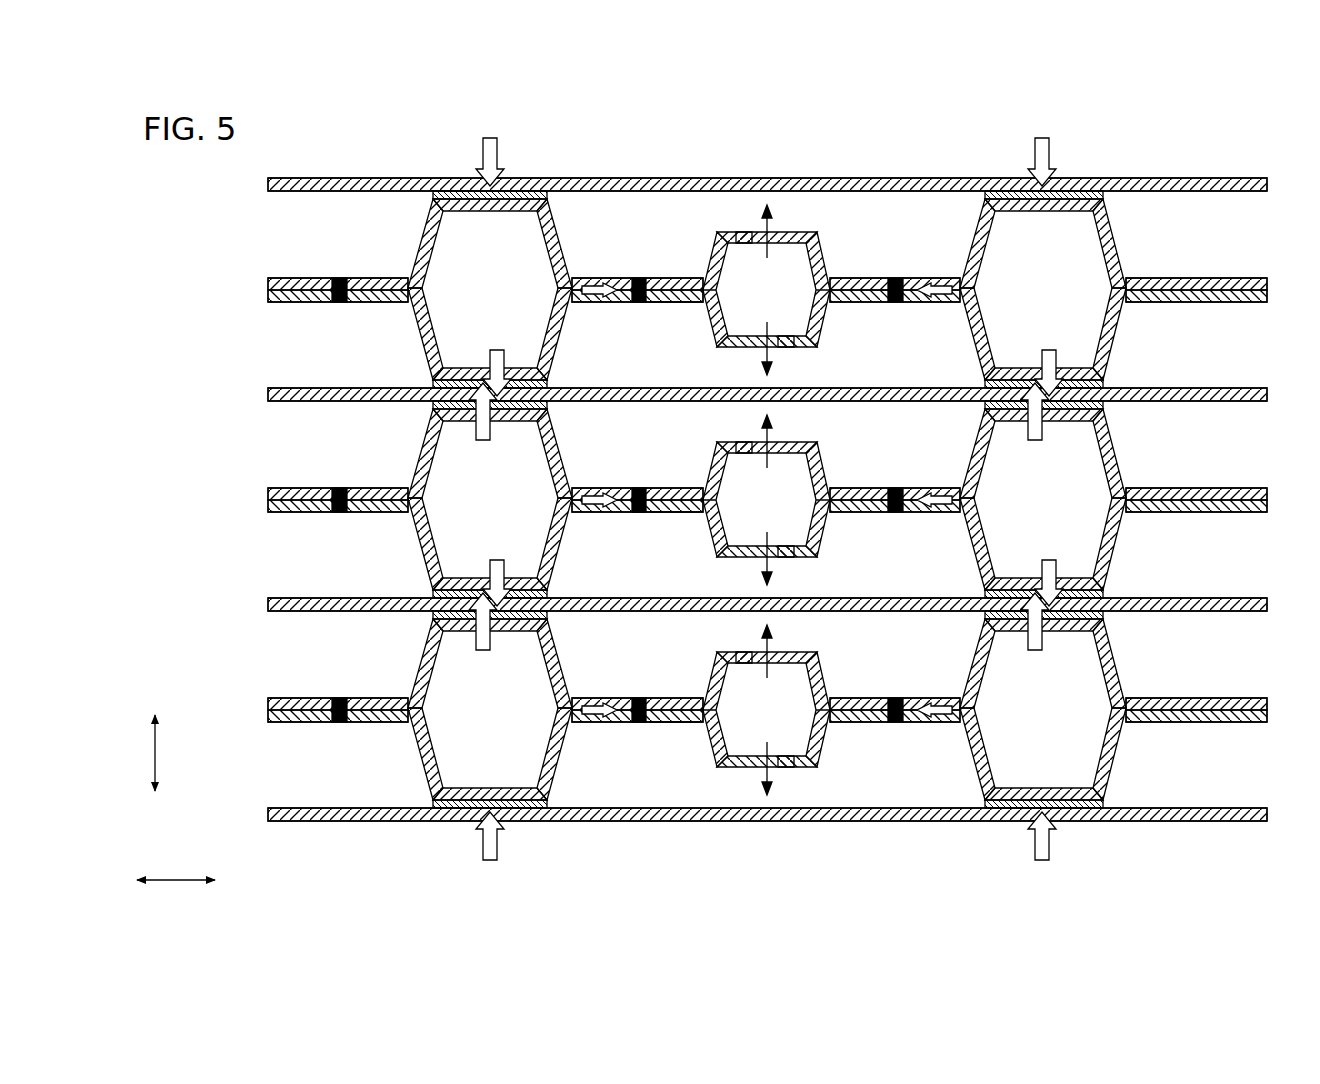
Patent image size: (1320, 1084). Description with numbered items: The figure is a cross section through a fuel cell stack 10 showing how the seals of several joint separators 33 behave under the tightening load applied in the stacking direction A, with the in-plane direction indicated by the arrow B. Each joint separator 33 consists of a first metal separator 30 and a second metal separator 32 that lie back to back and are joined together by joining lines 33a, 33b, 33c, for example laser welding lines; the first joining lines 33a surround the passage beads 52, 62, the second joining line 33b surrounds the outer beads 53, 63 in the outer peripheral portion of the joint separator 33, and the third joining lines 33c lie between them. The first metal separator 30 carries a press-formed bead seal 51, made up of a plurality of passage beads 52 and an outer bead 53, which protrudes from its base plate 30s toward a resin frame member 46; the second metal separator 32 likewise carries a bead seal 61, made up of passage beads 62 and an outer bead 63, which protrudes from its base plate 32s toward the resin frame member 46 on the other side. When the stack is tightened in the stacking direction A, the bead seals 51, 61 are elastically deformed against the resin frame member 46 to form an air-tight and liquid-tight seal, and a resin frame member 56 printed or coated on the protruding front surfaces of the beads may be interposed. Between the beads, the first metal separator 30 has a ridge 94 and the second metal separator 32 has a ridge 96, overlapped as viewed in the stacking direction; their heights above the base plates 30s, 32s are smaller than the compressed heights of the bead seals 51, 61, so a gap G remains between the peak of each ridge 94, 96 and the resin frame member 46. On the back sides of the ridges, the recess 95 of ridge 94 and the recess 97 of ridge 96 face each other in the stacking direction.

The stacked structure 10 is at (330, 144).
The resin frame member 46 is at (1227, 178).
The resin frame member 56 is at (517, 188).
The outer bead 53 is at (421, 252).
The outer bead 63 is at (422, 327).
The passage bead 52 is at (967, 249).
The passage bead 62 is at (967, 333).
The bead seal 51 is at (1113, 224).
The bead seal 61 is at (1113, 351).
The ridge 94 is at (745, 231).
The ridge 96 is at (748, 350).
The recess 95 is at (741, 237).
The recess 97 is at (784, 337).
The gap G is at (805, 214).
The first metal separator 30 is at (304, 485).
The second metal separator 32 is at (304, 516).
The joint separator 33 is at (259, 283).
The first joining line 33a is at (897, 278).
The second joining line 33b is at (338, 303).
The third joining line 33c is at (638, 306).
The base plate 30s is at (658, 278).
The base plate 32s is at (682, 305).
The stacking direction A is at (145, 753).
The width direction B is at (176, 865).